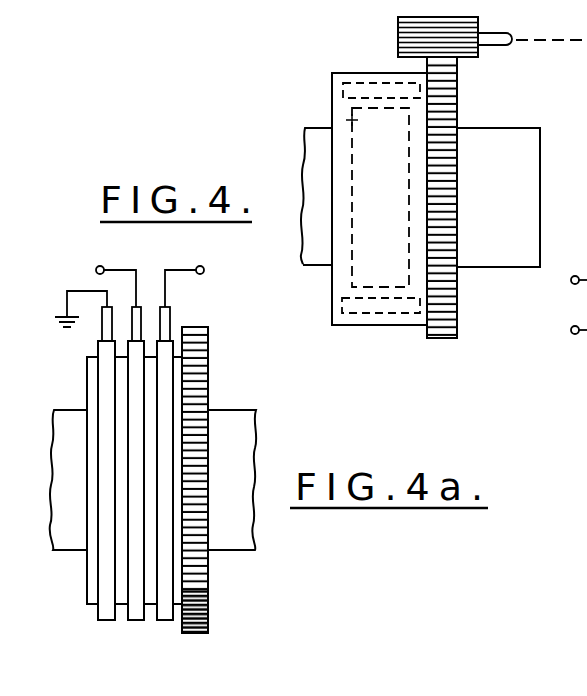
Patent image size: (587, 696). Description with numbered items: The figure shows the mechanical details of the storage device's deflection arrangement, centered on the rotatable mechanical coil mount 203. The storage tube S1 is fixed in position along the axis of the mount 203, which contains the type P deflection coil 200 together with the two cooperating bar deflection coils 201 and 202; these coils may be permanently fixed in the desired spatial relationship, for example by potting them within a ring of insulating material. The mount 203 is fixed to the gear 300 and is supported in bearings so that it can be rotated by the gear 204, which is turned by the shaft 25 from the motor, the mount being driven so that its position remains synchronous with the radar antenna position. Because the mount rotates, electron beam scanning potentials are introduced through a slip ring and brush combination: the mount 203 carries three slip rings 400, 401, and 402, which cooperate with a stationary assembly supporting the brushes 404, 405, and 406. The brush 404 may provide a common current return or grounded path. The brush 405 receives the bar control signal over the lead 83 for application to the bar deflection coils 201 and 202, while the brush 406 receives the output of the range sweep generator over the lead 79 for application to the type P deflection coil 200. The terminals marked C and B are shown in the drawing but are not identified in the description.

In FIG. 4, the lead 83 is at (96, 270).
In FIG. 4, the lead 79 is at (204, 270).
In FIG. 4, the brush 404 is at (100, 317).
In FIG. 4, the brush 405 is at (142, 317).
In FIG. 4, the brush 406 is at (171, 323).
In FIG. 4, the slip ring 400 is at (107, 560).
In FIG. 4, the slip ring 401 is at (130, 616).
In FIG. 4, the slip ring 402 is at (158, 612).
In FIG. 4, the gear 300 is at (210, 345).
In FIG. 4A, the gear 300 is at (462, 89).
In FIG. 4, the mechanical coil mount 203 is at (234, 497).
In FIG. 4A, the mechanical coil mount 203 is at (337, 147).
In FIG. 4A, the gear 204 is at (398, 43).
In FIG. 4A, the shaft 25 is at (548, 41).
In FIG. 4A, the bar deflection coil 201 is at (330, 84).
In FIG. 4A, the type P deflection coil 200 is at (350, 120).
In FIG. 4A, the bar deflection coil 202 is at (387, 312).
In FIG. 4A, the storage tube S1 is at (538, 174).
In FIG. 4A, the terminal C is at (579, 290).
In FIG. 4A, the terminal B is at (579, 340).